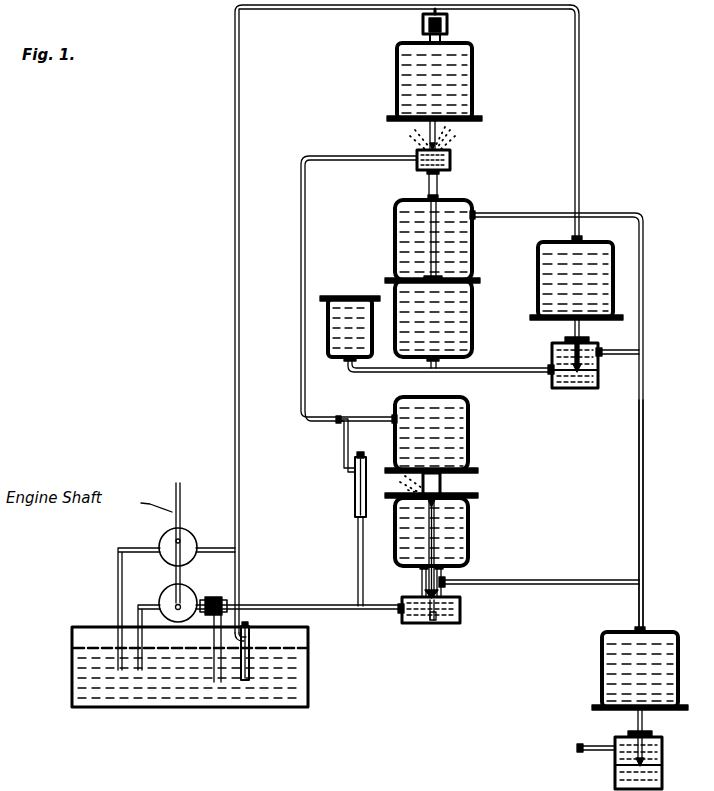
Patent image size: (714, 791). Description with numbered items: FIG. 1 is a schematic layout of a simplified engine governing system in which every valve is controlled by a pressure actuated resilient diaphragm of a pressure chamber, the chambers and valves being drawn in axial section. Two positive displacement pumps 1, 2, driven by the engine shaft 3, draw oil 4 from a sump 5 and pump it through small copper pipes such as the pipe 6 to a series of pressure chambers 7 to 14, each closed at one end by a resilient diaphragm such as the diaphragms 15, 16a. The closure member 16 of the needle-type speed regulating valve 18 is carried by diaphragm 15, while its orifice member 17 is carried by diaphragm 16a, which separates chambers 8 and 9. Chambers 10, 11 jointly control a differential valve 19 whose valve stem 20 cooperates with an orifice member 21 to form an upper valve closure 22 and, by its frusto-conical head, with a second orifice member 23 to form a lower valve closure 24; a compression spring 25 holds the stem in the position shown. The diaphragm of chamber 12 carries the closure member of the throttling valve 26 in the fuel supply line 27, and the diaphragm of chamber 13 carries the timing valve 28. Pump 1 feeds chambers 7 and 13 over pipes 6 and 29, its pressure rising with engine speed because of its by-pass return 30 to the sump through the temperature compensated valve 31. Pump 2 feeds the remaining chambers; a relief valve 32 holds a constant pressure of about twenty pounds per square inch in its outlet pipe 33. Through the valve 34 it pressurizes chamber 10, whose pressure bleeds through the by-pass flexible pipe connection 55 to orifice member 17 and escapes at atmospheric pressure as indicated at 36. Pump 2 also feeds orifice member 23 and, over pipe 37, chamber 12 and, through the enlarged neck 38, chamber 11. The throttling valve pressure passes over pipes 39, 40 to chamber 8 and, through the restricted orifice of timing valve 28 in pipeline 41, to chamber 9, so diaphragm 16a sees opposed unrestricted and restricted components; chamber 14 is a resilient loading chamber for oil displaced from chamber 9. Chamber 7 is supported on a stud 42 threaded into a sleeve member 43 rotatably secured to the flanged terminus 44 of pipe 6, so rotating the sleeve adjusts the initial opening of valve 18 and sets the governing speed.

The positive displacement pump 1 is at (170, 542).
The positive displacement pump 2 is at (165, 595).
The engine shaft 3 is at (181, 511).
The oil 4 is at (305, 652).
The sump 5 is at (210, 707).
The pipe 6 is at (234, 372).
The pressure chamber 7 is at (473, 80).
The pressure chamber 8 is at (395, 244).
The pressure chamber 9 is at (472, 318).
The pressure chamber 10 is at (469, 440).
The pressure chamber 11 is at (469, 548).
The pressure chamber 12 is at (602, 654).
The pressure chamber 13 is at (538, 260).
The pressure chamber 14 is at (340, 360).
The resilient diaphragm 15 is at (472, 120).
The closure member 16 is at (440, 134).
The resilient diaphragm 16a is at (418, 278).
The orifice member 17 is at (418, 168).
The speed regulating valve 18 is at (452, 160).
The differential valve 19 is at (486, 499).
The valve stem 20 is at (428, 528).
The orifice member 21 is at (442, 481).
The valve closure 22 is at (440, 500).
The orifice member 23 is at (443, 624).
The valve closure 24 is at (460, 608).
The compression spring 25 is at (418, 623).
The throttling valve 26 is at (663, 750).
The fuel supply line 27 is at (590, 747).
The timing valve 28 is at (552, 354).
The pipe 29 is at (580, 96).
The by-pass return 30 is at (240, 583).
The valve 31 is at (250, 626).
The relief valve 32 is at (215, 591).
The outlet pipe 33 is at (296, 604).
The valve 34 is at (355, 497).
The bleed outlet 36 is at (418, 148).
The pipe 37 is at (556, 582).
The enlarged neck 38 is at (421, 583).
The pipe 39 is at (645, 416).
The pipe 40 is at (644, 285).
The pipeline 41 is at (515, 382).
The stud 42 is at (423, 32).
The sleeve member 43 is at (448, 34).
The flanged terminus 44 is at (447, 13).
The pipe 55 is at (300, 380).